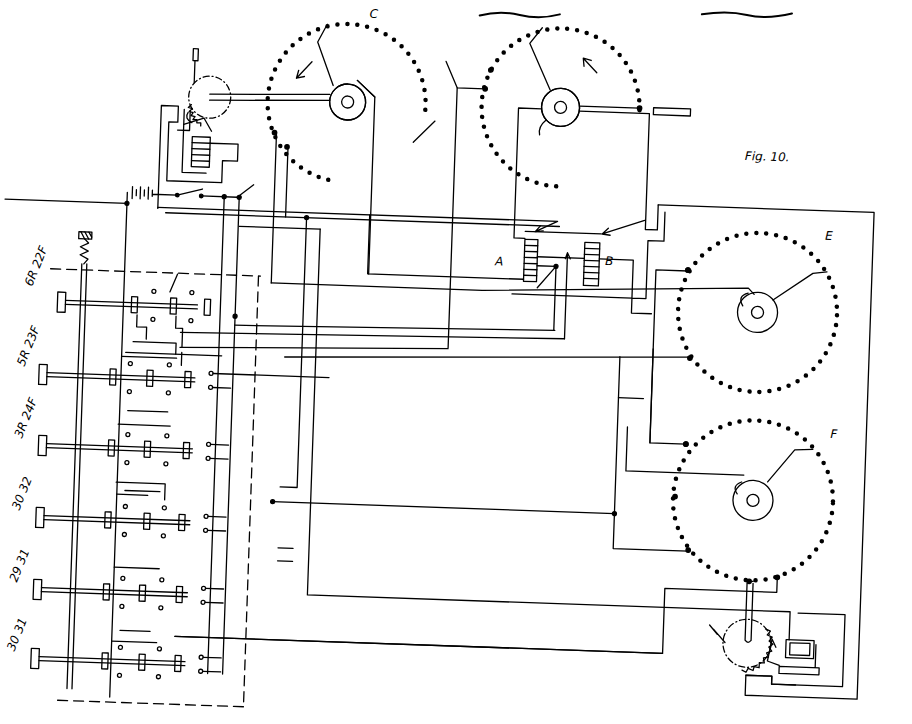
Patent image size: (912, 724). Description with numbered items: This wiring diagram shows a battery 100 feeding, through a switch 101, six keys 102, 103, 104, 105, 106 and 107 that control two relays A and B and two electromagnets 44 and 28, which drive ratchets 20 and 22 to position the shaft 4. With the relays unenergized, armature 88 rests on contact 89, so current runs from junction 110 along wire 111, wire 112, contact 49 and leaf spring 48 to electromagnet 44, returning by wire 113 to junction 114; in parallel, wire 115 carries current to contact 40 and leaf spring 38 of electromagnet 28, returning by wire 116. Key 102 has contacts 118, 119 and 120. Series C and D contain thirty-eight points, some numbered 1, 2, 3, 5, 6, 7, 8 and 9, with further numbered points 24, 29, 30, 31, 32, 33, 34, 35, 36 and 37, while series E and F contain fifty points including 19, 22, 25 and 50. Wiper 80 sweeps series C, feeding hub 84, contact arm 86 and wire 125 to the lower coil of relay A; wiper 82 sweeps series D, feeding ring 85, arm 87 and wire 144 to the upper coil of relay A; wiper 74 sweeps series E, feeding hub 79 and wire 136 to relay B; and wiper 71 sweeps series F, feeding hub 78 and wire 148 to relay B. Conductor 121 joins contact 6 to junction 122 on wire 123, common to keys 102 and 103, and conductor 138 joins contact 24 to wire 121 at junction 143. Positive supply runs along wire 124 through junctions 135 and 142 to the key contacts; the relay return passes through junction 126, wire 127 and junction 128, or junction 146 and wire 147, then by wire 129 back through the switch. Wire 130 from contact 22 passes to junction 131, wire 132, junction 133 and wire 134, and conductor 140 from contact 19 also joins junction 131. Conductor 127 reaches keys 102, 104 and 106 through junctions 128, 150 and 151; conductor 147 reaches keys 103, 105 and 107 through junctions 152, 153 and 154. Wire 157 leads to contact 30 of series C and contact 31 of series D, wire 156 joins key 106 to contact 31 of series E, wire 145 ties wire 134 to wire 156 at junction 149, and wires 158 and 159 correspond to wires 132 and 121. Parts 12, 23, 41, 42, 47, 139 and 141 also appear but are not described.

The contact 1 is at (536, 104).
The contact 2 is at (521, 94).
The contact 3 is at (534, 88).
The shaft 4 is at (666, 98).
The contact 5 is at (529, 63).
The contact 6 is at (512, 58).
The contact 7 is at (517, 42).
The contact 8 is at (392, 45).
The contact 9 is at (396, 26).
The shaft 12 is at (244, 90).
The contact point 19 is at (703, 450).
The ratchet 20 is at (205, 82).
The ratchet 22 is at (690, 261).
The shaft 23 is at (765, 390).
The contact point 24 is at (475, 70).
The contact 25 is at (484, 88).
The electromagnet 28 is at (810, 626).
The contact 29 is at (340, 102).
The contact 30 is at (832, 642).
The contact point 31 is at (700, 348).
The pawl 32 is at (778, 630).
The contact 33 is at (298, 168).
The contact 34 is at (311, 161).
The contact 35 is at (316, 178).
The contact 36 is at (326, 161).
The contact 37 is at (333, 181).
The leaf spring 38 is at (806, 696).
The contact 40 is at (757, 668).
The contact 41 is at (784, 556).
The lever 42 is at (183, 72).
The electromagnet 44 is at (185, 156).
The armature 47 is at (208, 126).
The leaf spring 48 is at (170, 138).
The contact 49 is at (176, 118).
The contact 50 is at (561, 304).
The wiper 71 is at (796, 452).
The wiper 74 is at (792, 278).
The hub 78 is at (720, 489).
The hub 79 is at (726, 309).
The wiper 80 is at (319, 63).
The wiper 82 is at (562, 77).
The hub 84 is at (330, 117).
The ring 85 is at (566, 115).
The contact arm 86 is at (371, 171).
The contact arm 87 is at (546, 137).
The armature 88 is at (566, 229).
The contact 89 is at (611, 209).
The battery 100 is at (126, 190).
The switch 101 is at (186, 208).
The key 102 is at (58, 328).
The key 103 is at (50, 400).
The key 104 is at (52, 472).
The key 105 is at (54, 542).
The key 106 is at (56, 612).
The key 107 is at (54, 684).
The junction 110 is at (67, 203).
The wire 111 is at (392, 214).
The wire 112 is at (404, 226).
The wire 113 is at (231, 160).
The junction 114 is at (105, 494).
The wire 115 is at (720, 196).
The wire 116 is at (318, 393).
The contact 118 is at (126, 476).
The contact 119 is at (164, 476).
The contact 120 is at (204, 479).
The conductor 121 is at (424, 52).
The junction 122 is at (133, 340).
The wire 123 is at (130, 518).
The wire 124 is at (125, 255).
The wire 125 is at (470, 266).
The junction 126 is at (547, 294).
The wire 127 is at (366, 325).
The junction 128 is at (469, 356).
The wire 129 is at (221, 266).
The wire 130 is at (630, 302).
The junction 131 is at (656, 365).
The wire 132 is at (426, 358).
The junction 133 is at (194, 360).
The wire 134 is at (348, 400).
The junction 135 is at (135, 282).
The wire 136 is at (653, 262).
The conductor 138 is at (466, 60).
The rod 139 is at (149, 469).
The conductor 140 is at (660, 402).
The conductor 141 is at (184, 270).
The junction 142 is at (156, 351).
The junction 143 is at (420, 131).
The wire 144 is at (512, 203).
The wire 145 is at (302, 568).
The junction 146 is at (568, 298).
The wire 147 is at (552, 342).
The wire 148 is at (620, 390).
The junction 149 is at (270, 495).
The junction 150 is at (243, 446).
The junction 151 is at (232, 590).
The junction 152 is at (269, 375).
The junction 153 is at (233, 530).
The junction 154 is at (240, 664).
The wire 156 is at (424, 507).
The wire 157 is at (304, 413).
The wire 158 is at (480, 643).
The wire 159 is at (302, 553).